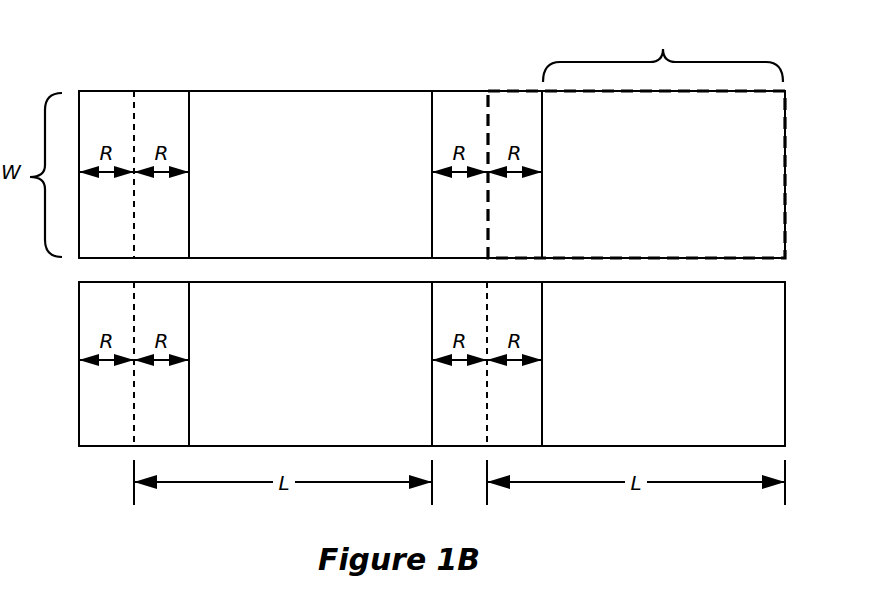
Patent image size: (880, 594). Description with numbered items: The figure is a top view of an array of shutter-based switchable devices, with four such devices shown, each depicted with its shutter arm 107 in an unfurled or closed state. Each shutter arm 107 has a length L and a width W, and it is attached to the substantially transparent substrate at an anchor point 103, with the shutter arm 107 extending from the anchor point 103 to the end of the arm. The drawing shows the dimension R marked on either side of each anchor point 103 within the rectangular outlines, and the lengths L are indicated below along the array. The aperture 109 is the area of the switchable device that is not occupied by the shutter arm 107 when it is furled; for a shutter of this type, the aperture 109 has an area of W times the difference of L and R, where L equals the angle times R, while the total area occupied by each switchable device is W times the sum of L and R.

The anchor point 103 is at (135, 91).
The shutter arm 107 is at (507, 110).
The aperture 109 is at (663, 53).